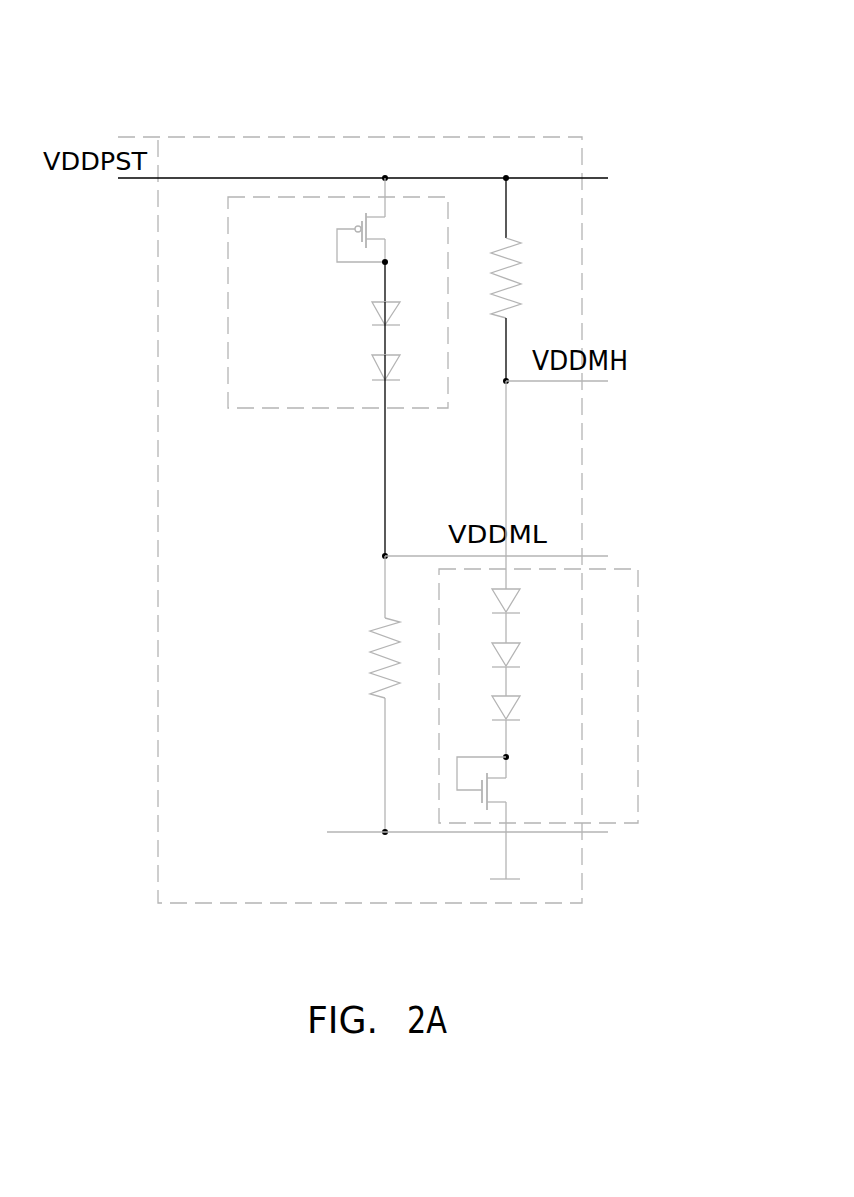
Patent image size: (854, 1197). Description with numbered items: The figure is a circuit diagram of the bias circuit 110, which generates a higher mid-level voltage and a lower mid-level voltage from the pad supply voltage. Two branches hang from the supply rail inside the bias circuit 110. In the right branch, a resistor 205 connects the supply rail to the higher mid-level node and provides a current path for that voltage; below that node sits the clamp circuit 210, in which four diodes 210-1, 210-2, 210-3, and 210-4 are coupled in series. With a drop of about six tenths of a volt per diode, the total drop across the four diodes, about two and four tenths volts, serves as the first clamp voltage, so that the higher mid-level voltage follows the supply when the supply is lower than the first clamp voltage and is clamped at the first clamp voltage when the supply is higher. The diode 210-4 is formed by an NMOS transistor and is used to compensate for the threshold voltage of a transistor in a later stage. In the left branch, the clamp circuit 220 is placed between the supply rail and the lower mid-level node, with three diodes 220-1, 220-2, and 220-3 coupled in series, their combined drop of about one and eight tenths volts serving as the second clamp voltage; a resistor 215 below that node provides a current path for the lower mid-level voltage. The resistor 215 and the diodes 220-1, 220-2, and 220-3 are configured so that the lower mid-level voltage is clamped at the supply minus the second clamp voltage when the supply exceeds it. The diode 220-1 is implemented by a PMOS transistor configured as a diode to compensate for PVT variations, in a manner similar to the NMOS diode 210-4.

The bias circuit 110 is at (77, 56).
The resistor 205 is at (528, 279).
The resistor 215 is at (360, 694).
The clamp circuit 220 is at (262, 410).
The diode 220-1 is at (326, 240).
The diode 220-2 is at (349, 327).
The diode 220-3 is at (349, 454).
The clamp circuit 210 is at (638, 767).
The diode 210-1 is at (542, 615).
The diode 210-2 is at (542, 668).
The diode 210-3 is at (542, 736).
The diode 210-4 is at (525, 814).